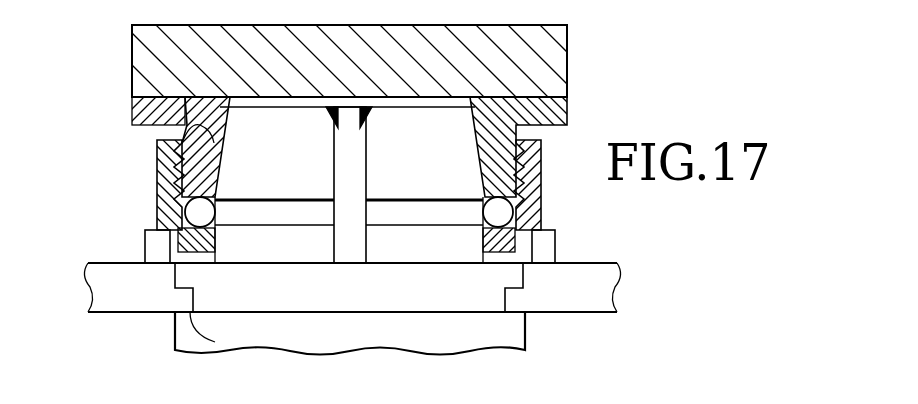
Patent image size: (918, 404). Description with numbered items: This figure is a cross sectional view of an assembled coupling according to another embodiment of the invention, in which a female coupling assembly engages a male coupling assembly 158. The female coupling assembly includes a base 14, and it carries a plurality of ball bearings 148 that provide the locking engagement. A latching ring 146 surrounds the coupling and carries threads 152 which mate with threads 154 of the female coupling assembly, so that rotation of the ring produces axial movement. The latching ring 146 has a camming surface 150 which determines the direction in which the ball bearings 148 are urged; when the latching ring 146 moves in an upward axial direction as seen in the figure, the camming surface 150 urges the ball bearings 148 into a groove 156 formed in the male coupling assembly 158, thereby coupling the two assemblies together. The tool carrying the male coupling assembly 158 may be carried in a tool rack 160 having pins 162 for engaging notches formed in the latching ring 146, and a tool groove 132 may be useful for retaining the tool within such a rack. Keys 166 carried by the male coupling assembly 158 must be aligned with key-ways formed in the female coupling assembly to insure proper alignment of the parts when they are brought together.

The base 14 is at (567, 108).
The male coupling assembly 158 is at (405, 125).
The threads 154 is at (220, 162).
The threads 152 is at (178, 140).
The latching ring 146 is at (158, 164).
The ball bearings 148 is at (215, 197).
The groove 156 is at (400, 213).
The camming surface 150 is at (222, 215).
The keys 166 is at (357, 248).
The pins 162 is at (150, 241).
The tool rack 160 is at (148, 312).
The tool groove 132 is at (222, 352).